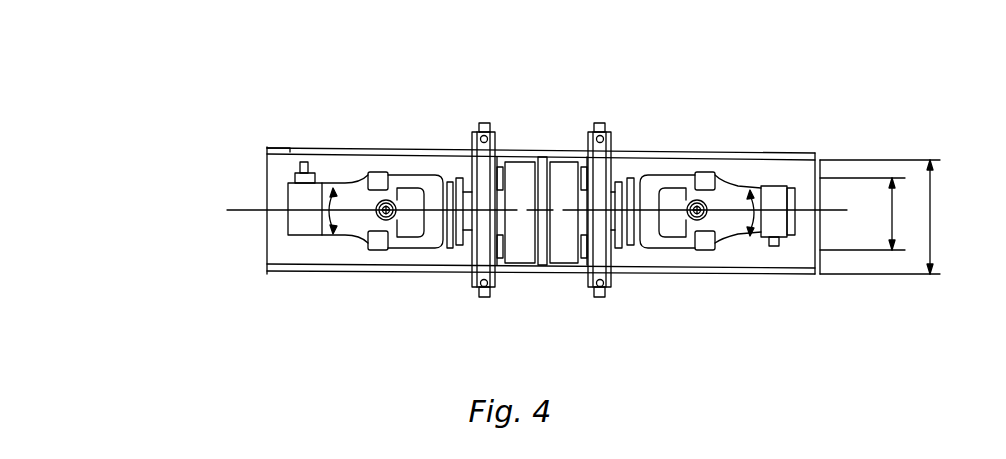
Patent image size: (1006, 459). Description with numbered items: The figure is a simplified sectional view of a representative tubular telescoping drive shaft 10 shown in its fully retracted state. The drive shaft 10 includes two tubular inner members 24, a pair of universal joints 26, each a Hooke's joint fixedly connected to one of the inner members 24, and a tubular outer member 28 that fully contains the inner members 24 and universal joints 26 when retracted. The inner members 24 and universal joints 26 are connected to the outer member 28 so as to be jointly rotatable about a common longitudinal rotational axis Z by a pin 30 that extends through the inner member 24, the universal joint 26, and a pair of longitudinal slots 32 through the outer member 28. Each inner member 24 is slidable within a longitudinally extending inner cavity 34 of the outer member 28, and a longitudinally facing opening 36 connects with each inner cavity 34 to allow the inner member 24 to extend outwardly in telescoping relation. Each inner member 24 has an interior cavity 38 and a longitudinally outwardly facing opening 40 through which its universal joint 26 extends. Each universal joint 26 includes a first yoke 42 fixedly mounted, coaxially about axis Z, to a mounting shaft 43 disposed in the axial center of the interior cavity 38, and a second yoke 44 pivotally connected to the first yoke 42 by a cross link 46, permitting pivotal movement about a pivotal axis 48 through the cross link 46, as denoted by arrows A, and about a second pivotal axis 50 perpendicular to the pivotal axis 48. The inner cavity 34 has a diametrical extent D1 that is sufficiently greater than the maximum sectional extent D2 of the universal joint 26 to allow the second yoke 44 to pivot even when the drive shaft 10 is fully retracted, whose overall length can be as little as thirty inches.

The drive shaft 10 is at (819, 150).
The inner member 24 is at (362, 183).
The universal joint 26 is at (287, 233).
The outer member 28 is at (818, 275).
The pin 30 is at (466, 285).
The longitudinal slot 32 is at (348, 156).
The inner cavity 34 is at (349, 268).
The longitudinally facing opening 36 is at (267, 160).
The interior cavity 38 is at (446, 157).
The longitudinally outwardly facing opening 40 is at (368, 253).
The first yoke 42 is at (410, 175).
The mounting shaft 43 is at (463, 130).
The second yoke 44 is at (360, 156).
The cross link 46 is at (375, 215).
The pivotal axis 48 is at (352, 258).
The second pivotal axis 50 is at (388, 199).
The arrows A is at (328, 222).
The longitudinal rotational axis Z is at (236, 210).
The diametrical extent of inner cavity D1 is at (932, 221).
The maximum sectional extent of universal joint D2 is at (894, 222).